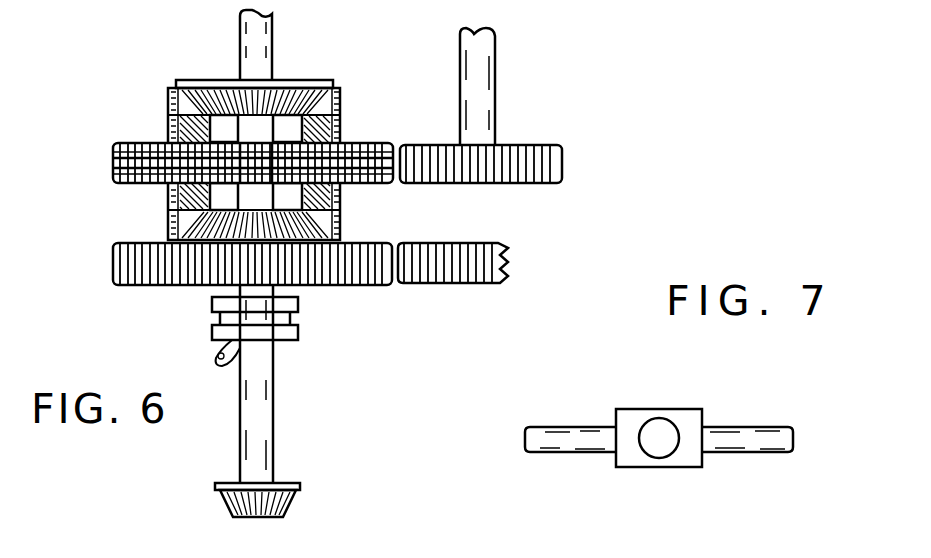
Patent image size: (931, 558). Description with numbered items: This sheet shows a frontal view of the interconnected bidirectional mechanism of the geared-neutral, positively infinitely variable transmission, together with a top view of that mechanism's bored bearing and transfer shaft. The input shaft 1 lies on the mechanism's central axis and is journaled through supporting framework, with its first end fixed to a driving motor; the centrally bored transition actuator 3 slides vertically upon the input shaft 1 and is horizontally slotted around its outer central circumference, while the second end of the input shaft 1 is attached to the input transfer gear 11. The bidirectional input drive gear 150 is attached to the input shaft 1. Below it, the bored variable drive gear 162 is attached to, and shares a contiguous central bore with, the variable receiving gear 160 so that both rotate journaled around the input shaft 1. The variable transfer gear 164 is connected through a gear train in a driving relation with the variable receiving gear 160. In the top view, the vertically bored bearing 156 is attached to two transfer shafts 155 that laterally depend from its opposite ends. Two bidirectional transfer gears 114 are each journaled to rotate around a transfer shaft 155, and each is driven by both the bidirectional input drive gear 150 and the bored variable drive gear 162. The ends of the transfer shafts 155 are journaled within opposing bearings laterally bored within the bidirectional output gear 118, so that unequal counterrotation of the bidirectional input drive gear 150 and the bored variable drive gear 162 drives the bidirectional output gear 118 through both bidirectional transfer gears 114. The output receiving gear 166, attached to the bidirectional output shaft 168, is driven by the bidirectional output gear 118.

In FIG. 6, the input shaft 1 is at (240, 28).
In FIG. 6, the transition actuator 3 is at (212, 300).
In FIG. 6, the input transfer gear 11 is at (215, 487).
In FIG. 6, the bidirectional transfer gears 114 is at (170, 100).
In FIG. 6, the bidirectional output gear 118 is at (124, 145).
In FIG. 6, the bidirectional input drive gear 150 is at (300, 80).
In FIG. 6, the transfer shafts 155 is at (146, 172).
In FIG. 7, the transfer shafts 155 is at (560, 427).
In FIG. 6, the vertically bored bearing 156 is at (300, 182).
In FIG. 7, the vertically bored bearing 156 is at (656, 469).
In FIG. 6, the variable receiving gear 160 is at (113, 265).
In FIG. 6, the bored variable drive gear 162 is at (168, 220).
In FIG. 6, the variable transfer gear 164 is at (508, 266).
In FIG. 6, the output receiving gear 166 is at (562, 160).
In FIG. 6, the bidirectional output shaft 168 is at (495, 56).